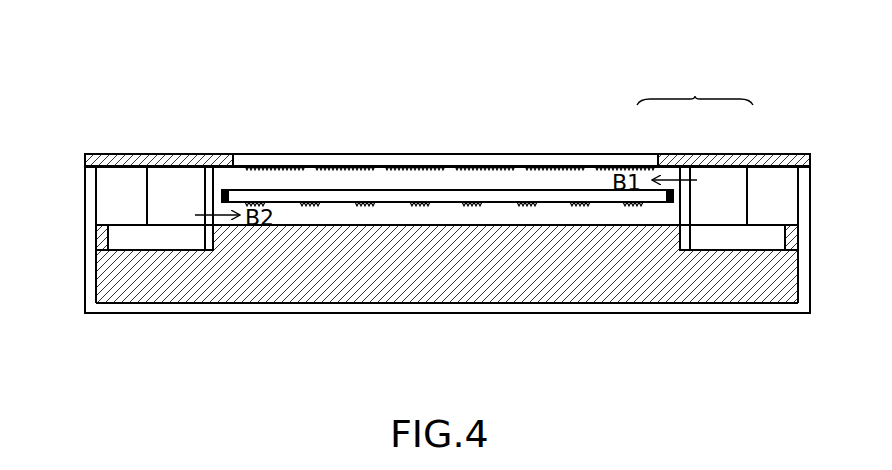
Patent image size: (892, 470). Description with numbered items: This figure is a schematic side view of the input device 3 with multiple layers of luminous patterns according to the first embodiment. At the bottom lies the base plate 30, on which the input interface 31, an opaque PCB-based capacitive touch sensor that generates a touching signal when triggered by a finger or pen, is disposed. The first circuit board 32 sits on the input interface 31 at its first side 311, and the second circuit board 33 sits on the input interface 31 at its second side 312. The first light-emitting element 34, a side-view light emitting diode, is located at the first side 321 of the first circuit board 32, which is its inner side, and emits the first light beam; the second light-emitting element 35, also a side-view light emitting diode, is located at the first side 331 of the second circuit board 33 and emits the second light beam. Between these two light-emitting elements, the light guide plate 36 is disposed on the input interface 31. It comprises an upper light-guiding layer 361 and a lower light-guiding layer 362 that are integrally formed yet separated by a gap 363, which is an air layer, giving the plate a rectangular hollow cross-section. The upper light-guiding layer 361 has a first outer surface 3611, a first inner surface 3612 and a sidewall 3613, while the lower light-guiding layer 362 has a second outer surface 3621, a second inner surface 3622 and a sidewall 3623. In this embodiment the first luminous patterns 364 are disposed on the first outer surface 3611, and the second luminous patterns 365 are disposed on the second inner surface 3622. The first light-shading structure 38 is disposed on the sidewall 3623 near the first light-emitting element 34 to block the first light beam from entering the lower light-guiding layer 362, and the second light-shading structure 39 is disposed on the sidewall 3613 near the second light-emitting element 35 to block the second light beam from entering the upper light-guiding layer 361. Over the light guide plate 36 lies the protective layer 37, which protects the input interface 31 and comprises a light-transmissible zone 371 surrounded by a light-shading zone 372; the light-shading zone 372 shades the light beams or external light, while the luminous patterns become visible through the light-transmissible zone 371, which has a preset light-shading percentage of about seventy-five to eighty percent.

The input device 3 is at (787, 48).
The base plate 30 is at (707, 308).
The input interface 31 is at (729, 284).
The first side of input interface 311 is at (775, 250).
The second side of input interface 312 is at (118, 250).
The first circuit board 32 is at (757, 243).
The first side of first circuit board 321 is at (705, 238).
The second circuit board 33 is at (137, 243).
The first side of second circuit board 331 is at (192, 238).
The first light-emitting element 34 is at (723, 187).
The second light-emitting element 35 is at (177, 183).
The light guide plate 36 is at (330, 183).
The upper light-guiding layer 361 is at (385, 178).
The first outer surface 3611 is at (500, 167).
The first inner surface 3612 is at (567, 190).
The sidewall of upper light-guiding layer 3613 is at (222, 207).
The lower light-guiding layer 362 is at (370, 212).
The second outer surface 3621 is at (228, 207).
The second inner surface 3622 is at (605, 203).
The sidewall of lower light-guiding layer 3623 is at (673, 192).
The gap 363 is at (495, 203).
The first luminous patterns 364 is at (353, 166).
The second luminous patterns 365 is at (430, 208).
The protective layer 37 is at (695, 89).
The light-transmissible zone 371 is at (600, 157).
The light-shading zone 372 is at (677, 157).
The first light-shading structure 38 is at (683, 205).
The second light-shading structure 39 is at (210, 172).